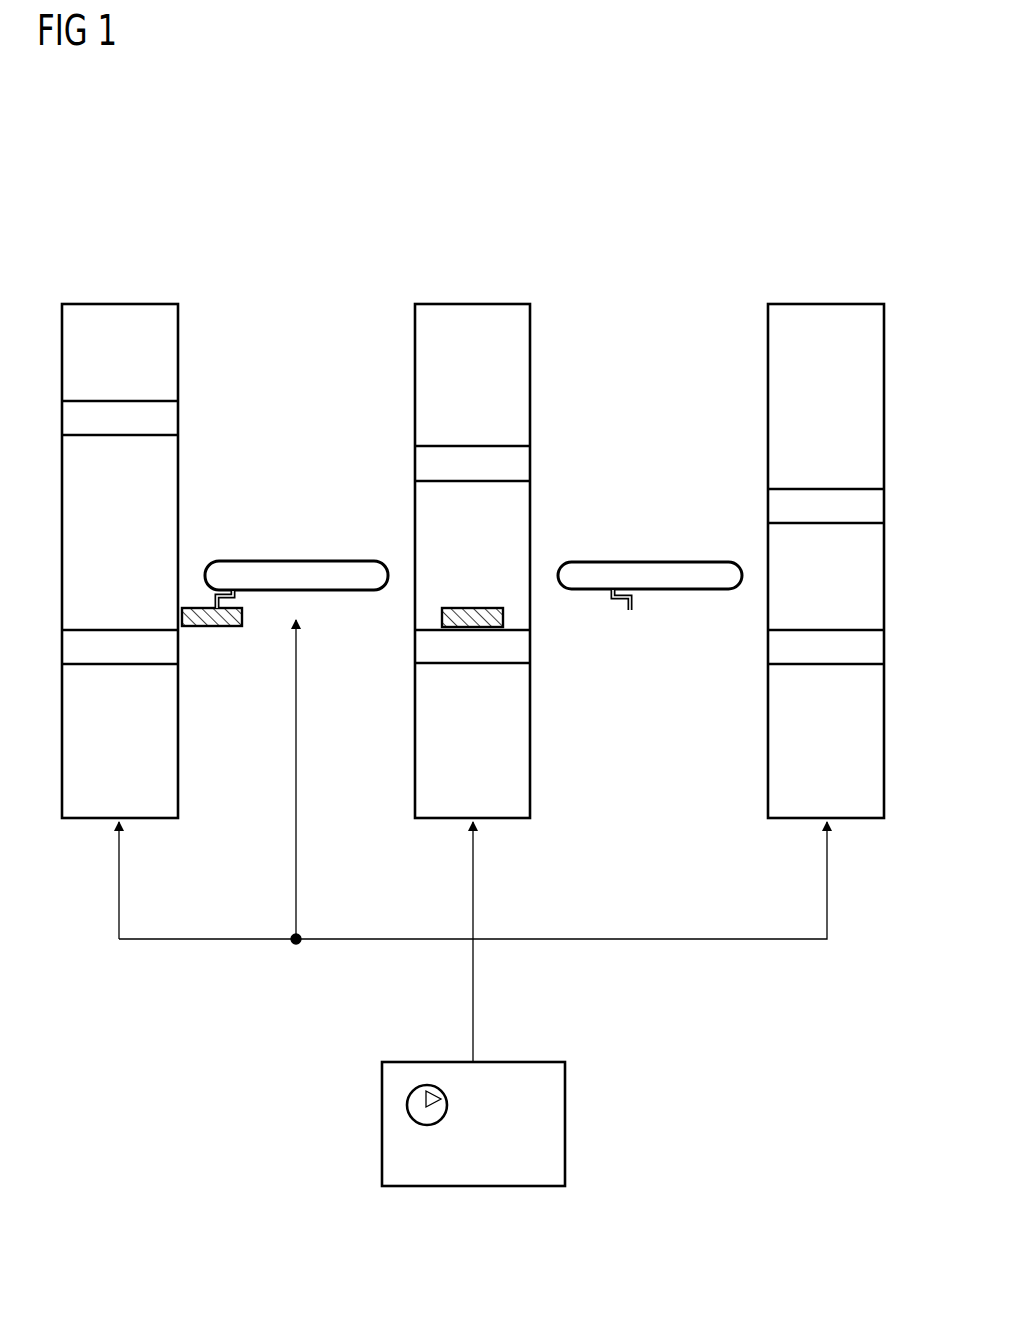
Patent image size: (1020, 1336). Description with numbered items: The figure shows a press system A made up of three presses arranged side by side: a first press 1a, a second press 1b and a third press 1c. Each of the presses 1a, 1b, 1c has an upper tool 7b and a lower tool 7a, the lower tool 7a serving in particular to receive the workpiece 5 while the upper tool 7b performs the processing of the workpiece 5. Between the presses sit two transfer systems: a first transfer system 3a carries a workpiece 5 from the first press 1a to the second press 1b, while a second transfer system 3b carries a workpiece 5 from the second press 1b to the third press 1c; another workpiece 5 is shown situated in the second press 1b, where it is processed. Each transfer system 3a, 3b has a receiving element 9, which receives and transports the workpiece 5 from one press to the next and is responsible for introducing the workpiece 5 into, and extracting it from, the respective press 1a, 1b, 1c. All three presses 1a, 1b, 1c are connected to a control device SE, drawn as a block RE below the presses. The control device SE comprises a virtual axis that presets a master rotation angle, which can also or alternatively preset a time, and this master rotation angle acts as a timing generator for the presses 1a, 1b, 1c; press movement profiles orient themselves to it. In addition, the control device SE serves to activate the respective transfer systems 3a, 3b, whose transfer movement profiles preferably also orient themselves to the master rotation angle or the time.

The system A is at (413, 150).
The first press 1a is at (122, 300).
The second press 1b is at (471, 300).
The third press 1c is at (828, 300).
The first transfer system 3a is at (316, 560).
The second transfer system 3b is at (658, 561).
The workpiece 5 is at (213, 630).
The lower tool 7a is at (119, 656).
The upper tool 7b is at (119, 412).
The receiving element 9 is at (631, 613).
The control device SE is at (382, 1128).
The control device RE is at (513, 1175).